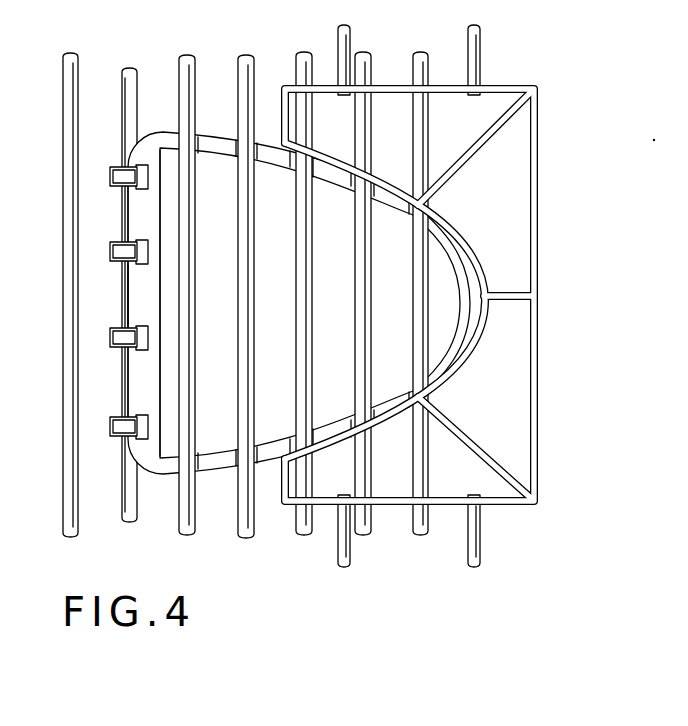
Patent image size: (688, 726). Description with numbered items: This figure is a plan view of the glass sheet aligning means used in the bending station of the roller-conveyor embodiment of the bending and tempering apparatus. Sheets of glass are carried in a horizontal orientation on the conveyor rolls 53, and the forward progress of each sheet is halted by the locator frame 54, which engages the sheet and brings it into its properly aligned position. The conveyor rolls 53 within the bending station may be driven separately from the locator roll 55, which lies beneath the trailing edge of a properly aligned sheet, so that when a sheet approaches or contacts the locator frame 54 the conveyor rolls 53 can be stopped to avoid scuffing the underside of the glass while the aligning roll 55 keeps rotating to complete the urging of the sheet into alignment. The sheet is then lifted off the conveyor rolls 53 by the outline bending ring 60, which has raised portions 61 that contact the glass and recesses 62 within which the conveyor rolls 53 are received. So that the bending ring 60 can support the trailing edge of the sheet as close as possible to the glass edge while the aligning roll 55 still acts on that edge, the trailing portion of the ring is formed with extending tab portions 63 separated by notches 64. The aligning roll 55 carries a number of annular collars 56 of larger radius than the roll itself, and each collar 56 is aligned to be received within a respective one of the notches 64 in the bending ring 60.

The conveyor rolls 53 is at (193, 72).
The locator frame 54 is at (538, 175).
The locator roll 55 is at (127, 68).
The annular collars 56 is at (109, 249).
The outline bending ring 60 is at (268, 137).
The raised portions 61 is at (268, 160).
The recesses 62 is at (237, 455).
The extending tab portions 63 is at (124, 383).
The notches 64 is at (134, 326).